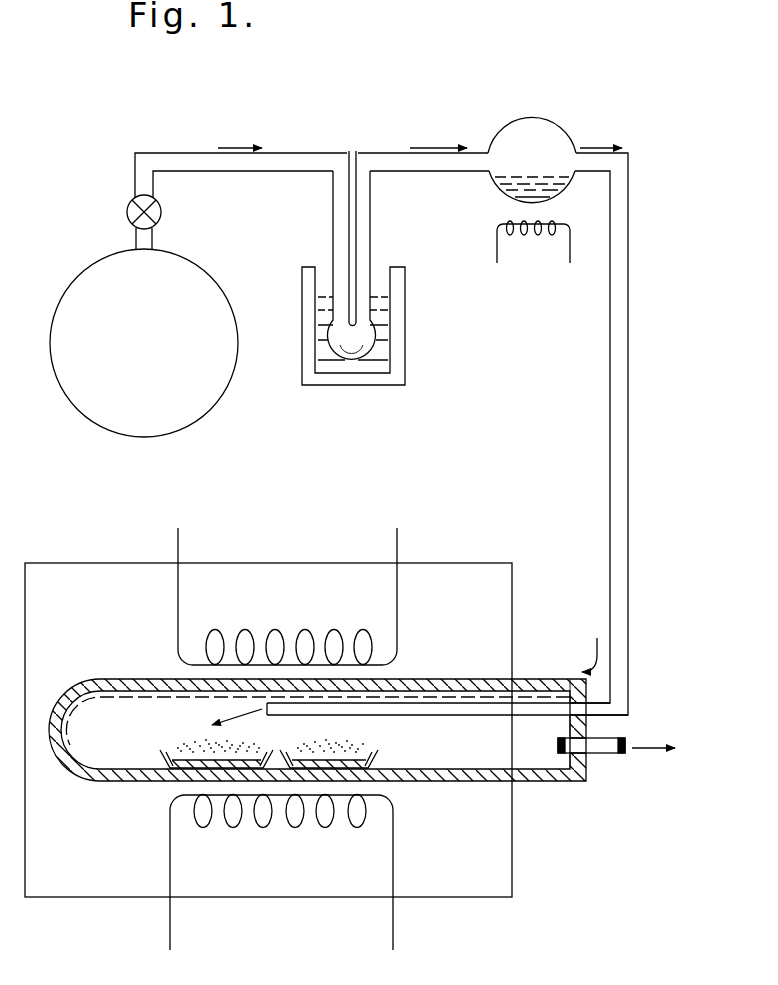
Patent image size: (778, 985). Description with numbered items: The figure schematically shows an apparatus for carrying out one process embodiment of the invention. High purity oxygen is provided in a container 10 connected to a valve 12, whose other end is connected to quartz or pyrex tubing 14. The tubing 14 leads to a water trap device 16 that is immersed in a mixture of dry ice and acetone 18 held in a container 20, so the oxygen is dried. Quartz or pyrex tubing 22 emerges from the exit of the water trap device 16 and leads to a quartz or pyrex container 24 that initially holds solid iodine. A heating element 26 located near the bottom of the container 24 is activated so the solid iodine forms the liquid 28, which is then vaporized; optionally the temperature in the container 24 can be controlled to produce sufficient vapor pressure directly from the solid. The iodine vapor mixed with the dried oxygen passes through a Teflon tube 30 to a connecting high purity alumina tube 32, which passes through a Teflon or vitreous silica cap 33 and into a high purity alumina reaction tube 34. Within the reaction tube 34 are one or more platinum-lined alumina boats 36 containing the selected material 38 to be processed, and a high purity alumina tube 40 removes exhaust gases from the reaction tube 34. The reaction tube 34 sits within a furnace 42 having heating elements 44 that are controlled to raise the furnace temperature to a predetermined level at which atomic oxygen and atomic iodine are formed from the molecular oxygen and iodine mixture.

The container 10 is at (57, 322).
The valve 12 is at (128, 209).
The quartz or pyrex tubing 14 is at (297, 153).
The water trap device 16 is at (330, 338).
The mixture of dry ice and acetone 18 is at (387, 333).
The container 20 is at (405, 373).
The quartz or pyrex tubing 22 is at (365, 153).
The quartz or pyrex container 24 is at (555, 130).
The heating element 26 is at (495, 250).
The liquid 28 is at (548, 196).
The Teflon tube 30 is at (630, 562).
The alumina tube 32 is at (515, 705).
The Teflon or vitreous silica cap 33 is at (588, 764).
The alumina reaction tube 34 is at (560, 783).
The platinum-lined alumina boats 36 is at (378, 760).
The selected material 38 is at (355, 750).
The alumina tube 40 is at (622, 740).
The furnace 42 is at (478, 563).
The heating elements 44 is at (400, 637).